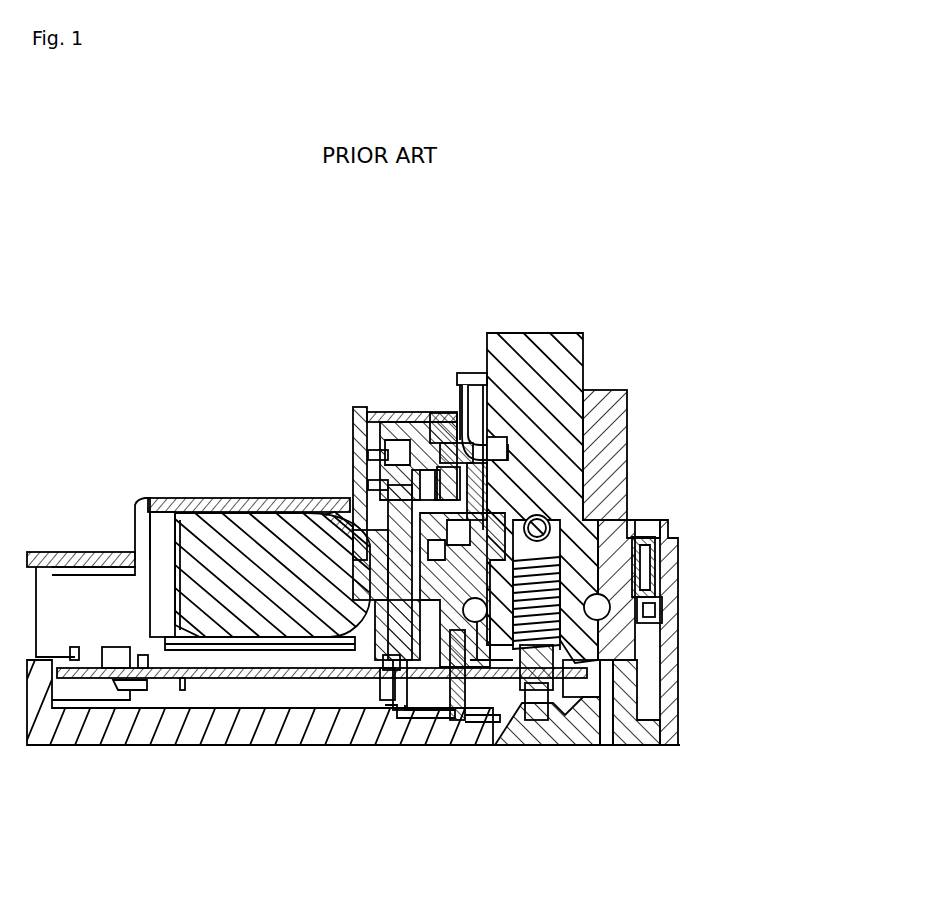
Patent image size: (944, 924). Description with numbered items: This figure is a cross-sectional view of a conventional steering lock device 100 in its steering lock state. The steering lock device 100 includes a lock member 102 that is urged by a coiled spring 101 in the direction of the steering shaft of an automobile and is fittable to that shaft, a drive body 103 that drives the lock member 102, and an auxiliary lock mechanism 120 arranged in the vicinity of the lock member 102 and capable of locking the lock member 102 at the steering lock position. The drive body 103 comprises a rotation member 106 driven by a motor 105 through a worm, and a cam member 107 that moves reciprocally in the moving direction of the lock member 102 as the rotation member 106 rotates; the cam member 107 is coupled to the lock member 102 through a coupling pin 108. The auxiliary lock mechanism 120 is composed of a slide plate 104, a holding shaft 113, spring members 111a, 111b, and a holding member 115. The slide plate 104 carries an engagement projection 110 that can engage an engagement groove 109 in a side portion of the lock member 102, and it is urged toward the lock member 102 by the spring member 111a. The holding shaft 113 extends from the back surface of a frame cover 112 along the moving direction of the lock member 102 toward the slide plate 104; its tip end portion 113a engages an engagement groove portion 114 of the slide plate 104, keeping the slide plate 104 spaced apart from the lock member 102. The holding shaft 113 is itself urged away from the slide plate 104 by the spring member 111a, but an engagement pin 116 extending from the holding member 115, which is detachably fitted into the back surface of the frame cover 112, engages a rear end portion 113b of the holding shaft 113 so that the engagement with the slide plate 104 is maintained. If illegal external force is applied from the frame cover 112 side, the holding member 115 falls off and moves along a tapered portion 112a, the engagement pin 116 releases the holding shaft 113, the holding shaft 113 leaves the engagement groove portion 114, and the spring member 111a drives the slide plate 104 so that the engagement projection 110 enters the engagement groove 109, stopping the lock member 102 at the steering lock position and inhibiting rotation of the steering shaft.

The steering lock device 100 is at (627, 295).
The coiled spring 101 is at (662, 617).
The lock member 102 is at (540, 333).
The drive body 103 is at (188, 498).
The slide plate 104 is at (431, 490).
The motor 105 is at (205, 562).
The rotation member 106 is at (648, 560).
The cam member 107 is at (482, 647).
The coupling pin 108 is at (620, 510).
The engagement groove 109 is at (481, 373).
The engagement projection 110 is at (468, 380).
The spring member 111a is at (368, 455).
The spring member 111b is at (372, 635).
The frame cover 112 is at (142, 738).
The tapered portion 112a is at (580, 695).
The holding shaft 113 is at (413, 640).
The tip end portion 113a is at (368, 485).
The rear end portion 113b is at (400, 688).
The engagement groove portion 114 is at (407, 440).
The holding member 115 is at (462, 733).
The engagement pin 116 is at (397, 728).
The auxiliary lock mechanism 120 is at (347, 372).